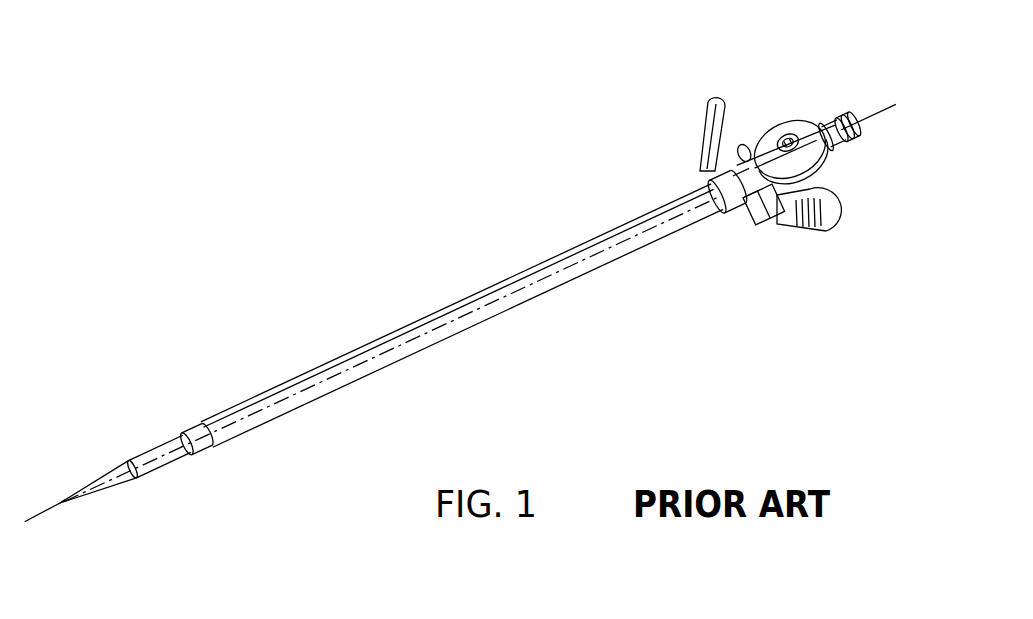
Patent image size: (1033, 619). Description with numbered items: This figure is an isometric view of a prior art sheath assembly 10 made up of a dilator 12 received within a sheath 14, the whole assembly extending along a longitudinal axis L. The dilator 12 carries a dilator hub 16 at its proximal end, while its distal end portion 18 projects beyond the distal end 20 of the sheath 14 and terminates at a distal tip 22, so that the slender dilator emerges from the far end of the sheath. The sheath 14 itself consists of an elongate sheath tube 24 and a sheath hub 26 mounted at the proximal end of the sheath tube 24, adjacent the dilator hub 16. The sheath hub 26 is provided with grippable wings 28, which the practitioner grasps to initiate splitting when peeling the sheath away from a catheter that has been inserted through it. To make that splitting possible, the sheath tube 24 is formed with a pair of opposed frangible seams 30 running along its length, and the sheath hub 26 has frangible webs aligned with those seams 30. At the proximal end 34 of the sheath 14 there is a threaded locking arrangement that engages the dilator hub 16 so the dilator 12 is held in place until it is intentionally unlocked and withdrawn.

The sheath assembly 10 is at (462, 303).
The dilator 12 is at (840, 96).
The sheath 14 is at (457, 305).
The dilator hub 16 is at (798, 164).
The distal end portion 18 is at (166, 507).
The distal end 20 is at (125, 432).
The distal tip 22 is at (85, 549).
The sheath tube 24 is at (468, 329).
The sheath hub 26 is at (758, 265).
The grippable wings 28 is at (730, 186).
The frangible seams 30 is at (168, 391).
The proximal end 34 is at (701, 86).
The longitudinal axis L is at (391, 349).